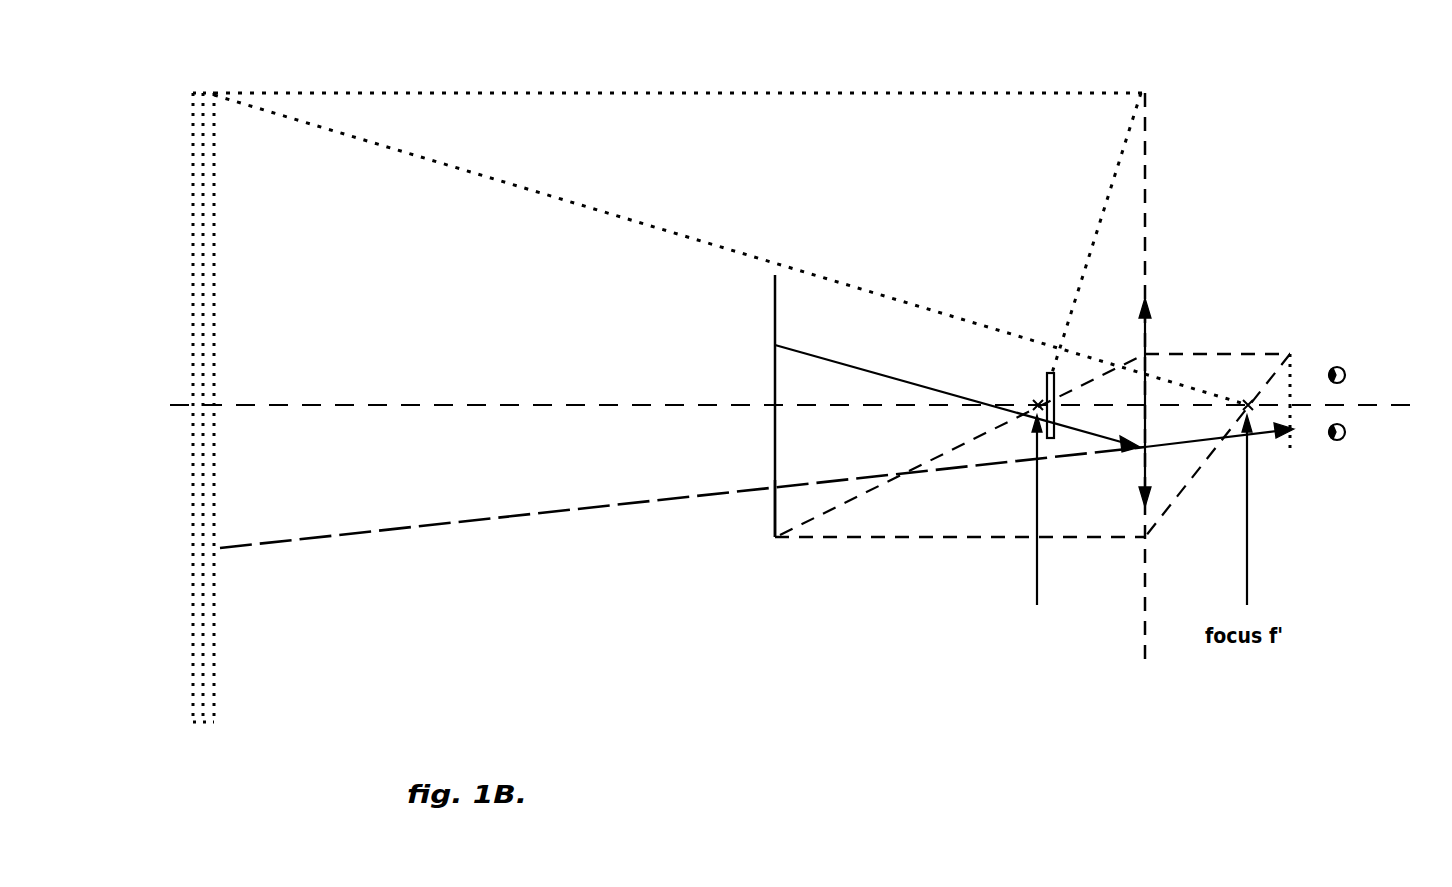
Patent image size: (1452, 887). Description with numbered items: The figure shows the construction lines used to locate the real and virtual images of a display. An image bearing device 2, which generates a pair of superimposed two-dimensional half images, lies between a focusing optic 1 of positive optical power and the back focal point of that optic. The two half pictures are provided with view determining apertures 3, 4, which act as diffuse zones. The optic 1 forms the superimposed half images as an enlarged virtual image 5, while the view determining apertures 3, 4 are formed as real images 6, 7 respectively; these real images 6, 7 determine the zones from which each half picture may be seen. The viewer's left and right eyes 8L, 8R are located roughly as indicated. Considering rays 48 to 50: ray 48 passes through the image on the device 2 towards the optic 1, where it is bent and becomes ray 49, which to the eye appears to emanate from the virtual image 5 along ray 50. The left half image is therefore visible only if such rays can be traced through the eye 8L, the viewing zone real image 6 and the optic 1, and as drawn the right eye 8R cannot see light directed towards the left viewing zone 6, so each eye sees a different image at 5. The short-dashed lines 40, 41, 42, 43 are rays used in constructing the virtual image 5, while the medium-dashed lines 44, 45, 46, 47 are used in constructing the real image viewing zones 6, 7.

The focusing optic 1 is at (1152, 320).
The image bearing device 2 is at (1040, 385).
The view determining aperture 3 is at (775, 325).
The view determining aperture 4 is at (780, 507).
The virtual image 5 is at (214, 610).
The real image 6 is at (1293, 456).
The real image 7 is at (1292, 365).
The right eye 8R is at (1345, 375).
The left eye 8L is at (1345, 432).
The construction line 40 is at (1118, 172).
The construction line 41 is at (1075, 372).
The construction line 42 is at (607, 215).
The construction line 43 is at (537, 93).
The construction line 44 is at (845, 505).
The construction line 45 is at (1258, 345).
The construction line 46 is at (1000, 537).
The construction line 47 is at (1204, 458).
The ray 48 is at (1125, 438).
The ray 49 is at (1190, 446).
The ray 50 is at (935, 466).